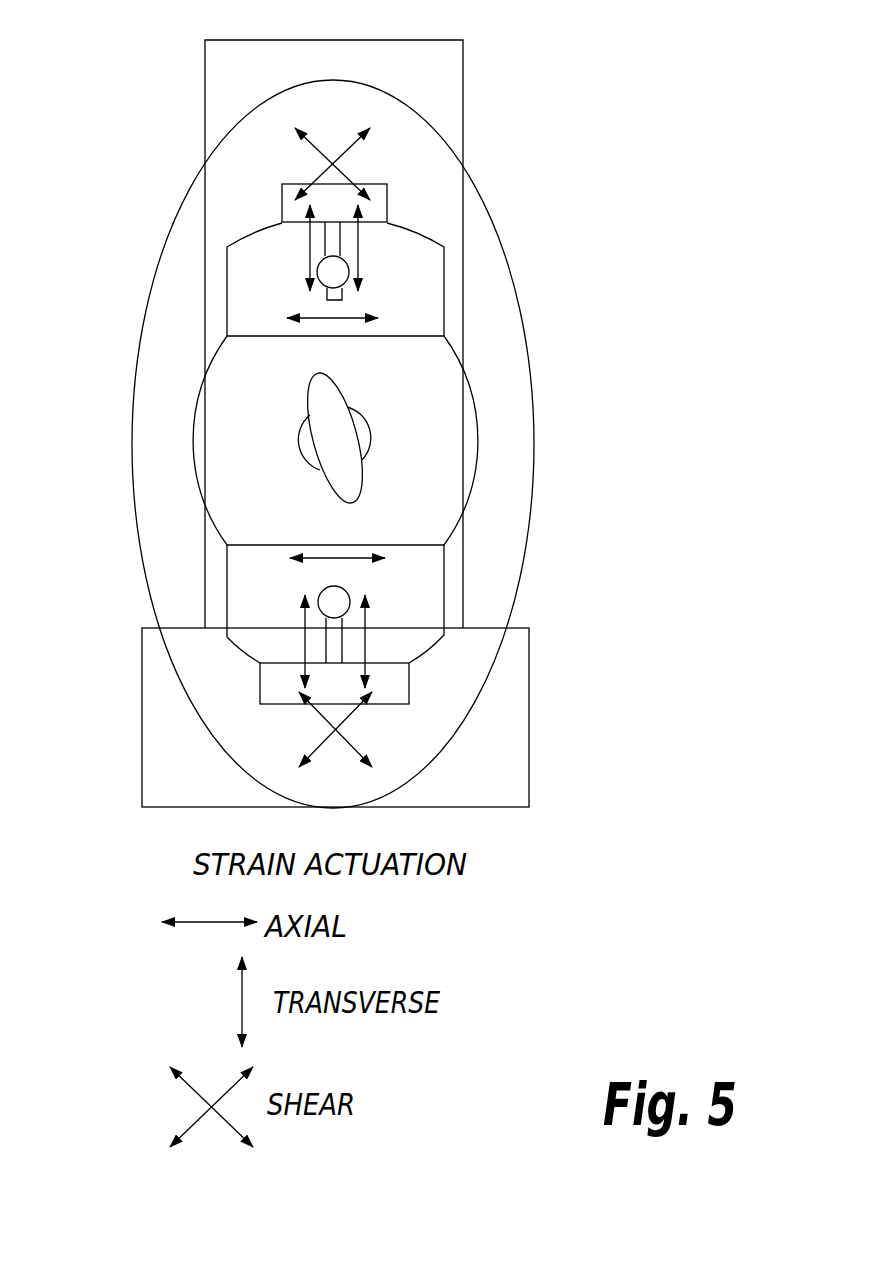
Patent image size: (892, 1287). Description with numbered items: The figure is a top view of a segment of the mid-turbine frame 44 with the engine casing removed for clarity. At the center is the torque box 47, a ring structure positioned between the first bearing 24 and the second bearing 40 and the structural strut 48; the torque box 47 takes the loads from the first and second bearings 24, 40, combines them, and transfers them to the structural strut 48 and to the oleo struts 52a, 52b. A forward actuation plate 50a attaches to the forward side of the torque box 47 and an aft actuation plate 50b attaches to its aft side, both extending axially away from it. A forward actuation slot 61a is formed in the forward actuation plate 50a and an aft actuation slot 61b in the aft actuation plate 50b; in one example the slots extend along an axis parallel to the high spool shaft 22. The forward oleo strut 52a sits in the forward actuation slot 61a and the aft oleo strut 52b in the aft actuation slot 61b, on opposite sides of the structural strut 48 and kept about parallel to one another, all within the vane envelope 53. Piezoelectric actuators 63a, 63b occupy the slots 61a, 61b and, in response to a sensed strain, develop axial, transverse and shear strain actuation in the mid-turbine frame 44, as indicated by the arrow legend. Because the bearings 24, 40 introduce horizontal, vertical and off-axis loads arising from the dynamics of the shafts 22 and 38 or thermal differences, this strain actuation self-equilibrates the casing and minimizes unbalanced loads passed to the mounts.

The high spool shaft 22 is at (528, 767).
The first bearing 24 is at (409, 688).
The shaft 38 is at (463, 90).
The second bearing 40 is at (388, 194).
The mid-turbine frame 44 is at (457, 559).
The torque box 47 is at (222, 453).
The structural strut 48 is at (325, 400).
The forward actuation plate 50a is at (430, 609).
The aft actuation plate 50b is at (430, 328).
The forward oleo strut 52a is at (330, 598).
The aft oleo strut 52b is at (328, 272).
The vane envelope 53 is at (535, 390).
The forward actuation slot 61a is at (322, 703).
The aft actuation slot 61b is at (334, 238).
The forward piezoelectric actuator 63a is at (333, 638).
The aft piezoelectric actuator 63b is at (283, 224).